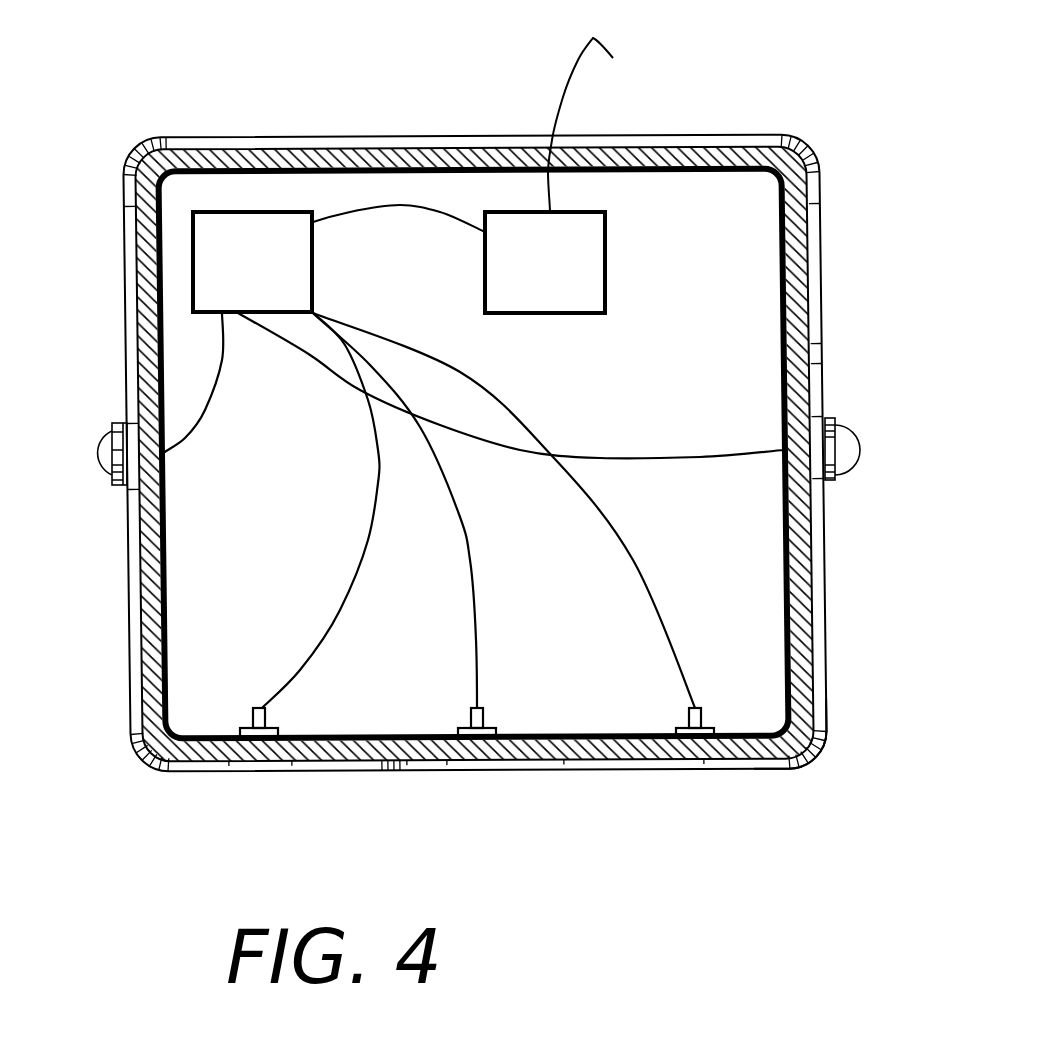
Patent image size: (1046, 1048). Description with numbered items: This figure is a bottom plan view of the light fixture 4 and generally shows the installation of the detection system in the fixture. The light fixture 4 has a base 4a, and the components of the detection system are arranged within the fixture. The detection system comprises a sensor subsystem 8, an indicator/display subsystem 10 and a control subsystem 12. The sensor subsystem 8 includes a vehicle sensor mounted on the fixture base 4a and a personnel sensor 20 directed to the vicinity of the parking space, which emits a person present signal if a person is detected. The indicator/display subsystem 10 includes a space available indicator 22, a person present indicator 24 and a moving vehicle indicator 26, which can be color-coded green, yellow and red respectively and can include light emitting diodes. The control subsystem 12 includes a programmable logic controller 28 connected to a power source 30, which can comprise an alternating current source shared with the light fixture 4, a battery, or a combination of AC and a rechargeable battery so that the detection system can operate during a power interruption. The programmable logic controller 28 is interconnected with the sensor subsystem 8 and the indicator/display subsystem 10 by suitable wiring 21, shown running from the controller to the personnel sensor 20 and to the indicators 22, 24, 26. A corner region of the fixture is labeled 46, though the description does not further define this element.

The light fixture 4 is at (818, 143).
The base 4a is at (784, 212).
The sensor subsystem 8 is at (848, 408).
The indicator/display subsystem 10 is at (655, 784).
The control subsystem 12 is at (194, 206).
The personnel sensor 20 is at (108, 482).
The wiring 21 is at (560, 105).
The space available indicator 22 is at (236, 773).
The person present indicator 24 is at (455, 773).
The moving vehicle indicator 26 is at (725, 773).
The programmable logic controller 28 is at (314, 214).
The power source 30 is at (608, 305).
The housing corner 46 is at (817, 768).